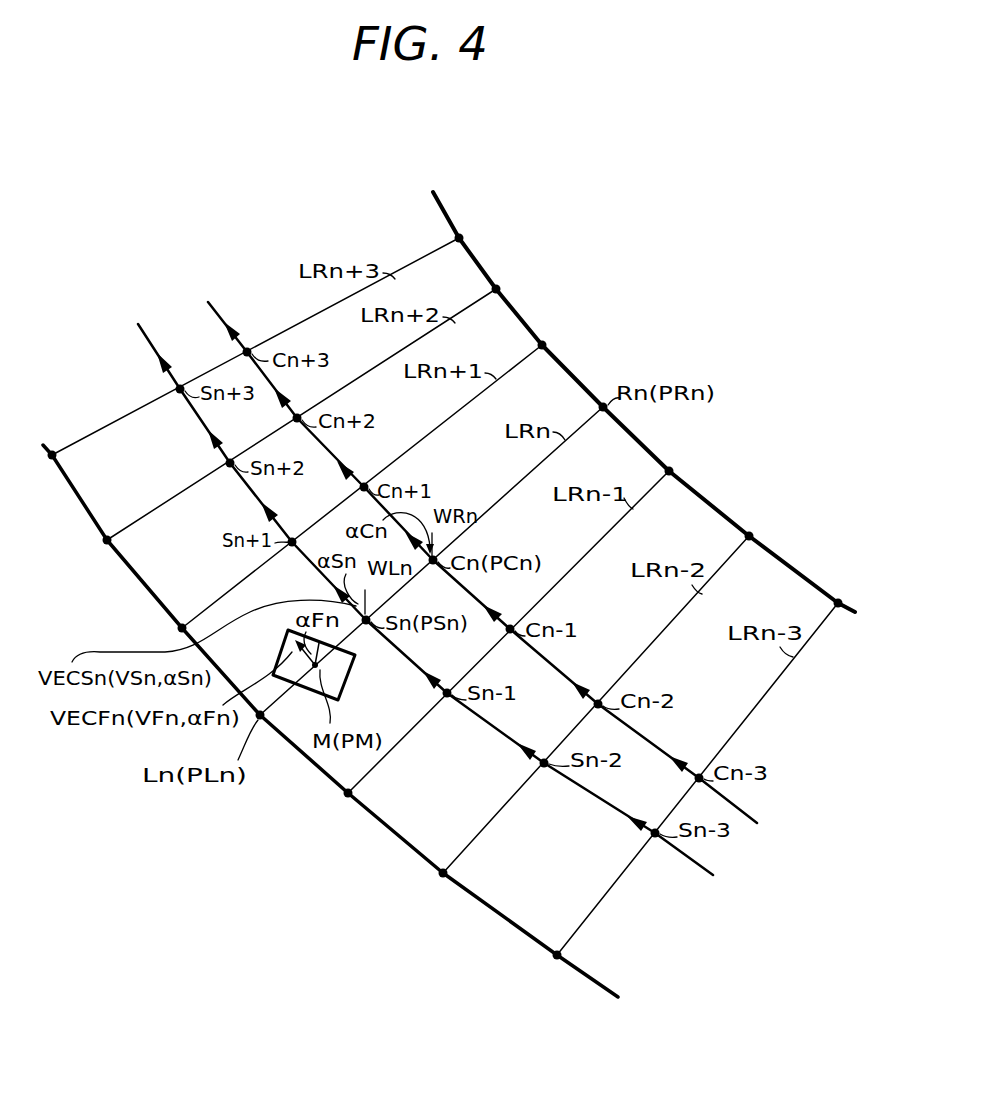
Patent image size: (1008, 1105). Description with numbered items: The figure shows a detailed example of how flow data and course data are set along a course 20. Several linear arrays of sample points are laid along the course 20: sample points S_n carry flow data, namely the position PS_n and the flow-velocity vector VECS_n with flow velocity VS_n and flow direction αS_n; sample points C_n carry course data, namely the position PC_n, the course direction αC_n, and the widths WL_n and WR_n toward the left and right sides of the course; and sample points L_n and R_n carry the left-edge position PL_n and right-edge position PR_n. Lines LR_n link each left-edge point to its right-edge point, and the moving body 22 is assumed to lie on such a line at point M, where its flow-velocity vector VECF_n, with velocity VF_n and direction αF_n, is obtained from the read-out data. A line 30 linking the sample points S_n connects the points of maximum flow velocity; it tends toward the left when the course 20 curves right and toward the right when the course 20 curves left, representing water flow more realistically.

The course 20 is at (717, 508).
The moving body 22 is at (350, 675).
The line linking the sample points S_n 30 is at (687, 857).